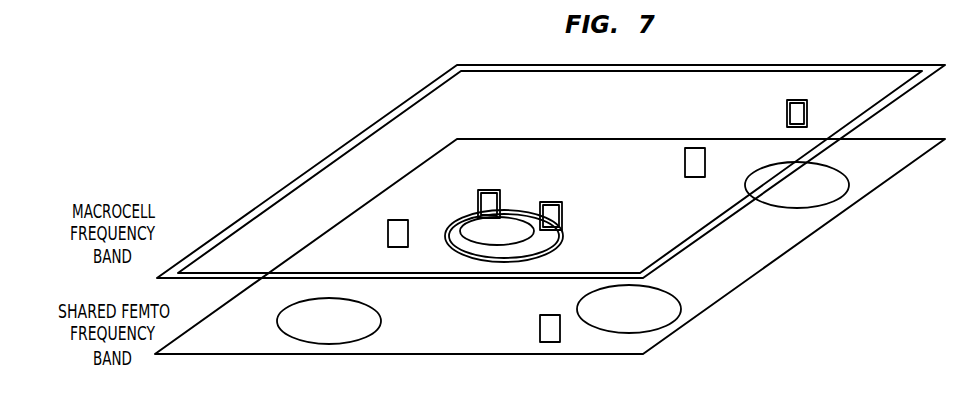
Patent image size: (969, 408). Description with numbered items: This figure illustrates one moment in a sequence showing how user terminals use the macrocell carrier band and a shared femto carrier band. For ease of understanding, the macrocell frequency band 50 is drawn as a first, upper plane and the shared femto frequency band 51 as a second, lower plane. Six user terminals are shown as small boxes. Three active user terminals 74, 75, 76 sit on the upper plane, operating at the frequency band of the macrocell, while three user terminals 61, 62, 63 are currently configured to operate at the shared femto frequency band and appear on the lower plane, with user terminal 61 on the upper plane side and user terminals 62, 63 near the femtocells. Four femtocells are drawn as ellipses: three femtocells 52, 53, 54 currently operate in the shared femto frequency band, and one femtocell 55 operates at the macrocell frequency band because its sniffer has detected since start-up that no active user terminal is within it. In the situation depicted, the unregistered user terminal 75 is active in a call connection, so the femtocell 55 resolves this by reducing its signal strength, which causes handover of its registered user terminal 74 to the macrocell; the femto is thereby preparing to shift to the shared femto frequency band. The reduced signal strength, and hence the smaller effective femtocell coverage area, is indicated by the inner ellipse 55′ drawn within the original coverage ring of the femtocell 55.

The macrocell frequency band 50 is at (916, 64).
The shared femto frequency band 51 is at (918, 138).
The femtocell 52 is at (779, 208).
The femtocell 53 is at (712, 280).
The femtocell 54 is at (279, 320).
The femtocell 55 is at (446, 242).
The reduced effective femtocell coverage area 55′ is at (527, 240).
The user terminal 61 is at (388, 234).
The user terminal 62 is at (683, 162).
The user terminal 63 is at (539, 327).
The user terminal 74 is at (564, 208).
The user terminal 75 is at (502, 197).
The user terminal 76 is at (786, 112).